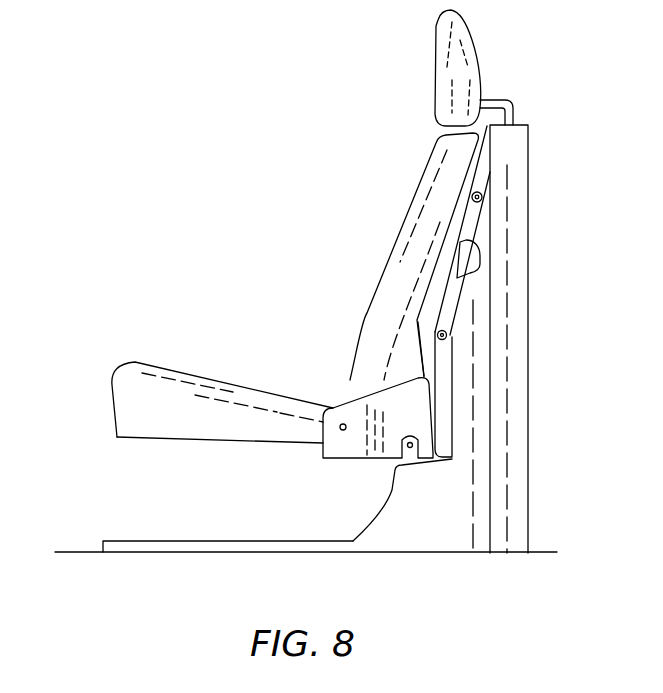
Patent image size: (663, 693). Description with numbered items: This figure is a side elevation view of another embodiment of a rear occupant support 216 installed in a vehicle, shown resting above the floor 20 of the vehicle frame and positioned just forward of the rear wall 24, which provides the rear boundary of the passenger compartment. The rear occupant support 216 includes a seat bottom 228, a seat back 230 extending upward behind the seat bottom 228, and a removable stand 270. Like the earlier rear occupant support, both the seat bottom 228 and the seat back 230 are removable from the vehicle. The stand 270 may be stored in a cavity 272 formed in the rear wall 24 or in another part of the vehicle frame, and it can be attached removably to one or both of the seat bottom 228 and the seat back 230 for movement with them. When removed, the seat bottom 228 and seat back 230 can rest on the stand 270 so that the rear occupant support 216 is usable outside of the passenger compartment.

The rear occupant support 216 is at (160, 45).
The seat back 230 is at (388, 228).
The seat bottom 228 is at (231, 368).
The cavity 272 is at (482, 220).
The removable stand 270 is at (464, 297).
The rear wall 24 is at (518, 347).
The floor 20 is at (147, 540).